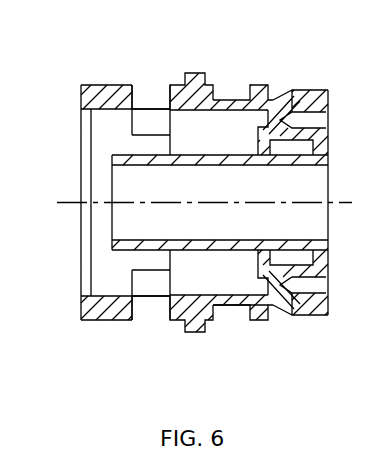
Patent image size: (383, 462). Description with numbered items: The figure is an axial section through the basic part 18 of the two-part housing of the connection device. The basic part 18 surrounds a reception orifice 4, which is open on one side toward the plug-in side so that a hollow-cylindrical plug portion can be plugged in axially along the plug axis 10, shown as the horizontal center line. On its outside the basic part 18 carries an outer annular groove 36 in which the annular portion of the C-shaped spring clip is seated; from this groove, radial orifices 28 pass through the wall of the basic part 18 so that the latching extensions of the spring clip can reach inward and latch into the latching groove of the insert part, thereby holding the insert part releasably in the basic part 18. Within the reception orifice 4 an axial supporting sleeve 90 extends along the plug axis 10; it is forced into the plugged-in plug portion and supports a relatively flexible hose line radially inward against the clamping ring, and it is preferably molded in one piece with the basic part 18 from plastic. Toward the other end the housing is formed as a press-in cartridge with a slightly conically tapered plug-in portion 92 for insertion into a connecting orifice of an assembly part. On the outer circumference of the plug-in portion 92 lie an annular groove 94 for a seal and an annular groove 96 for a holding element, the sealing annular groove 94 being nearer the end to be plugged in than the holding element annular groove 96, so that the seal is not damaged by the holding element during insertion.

The reception orifice 4 is at (110, 137).
The plug axis 10 is at (342, 200).
The basic part 18 is at (230, 100).
The orifices 28 is at (157, 103).
The outer annular groove 36 is at (181, 85).
The axial supporting sleeve 90 is at (132, 252).
The plug-in portion 92 is at (312, 88).
The annular groove for a seal 94 is at (283, 312).
The annular groove for a holding element 96 is at (235, 312).